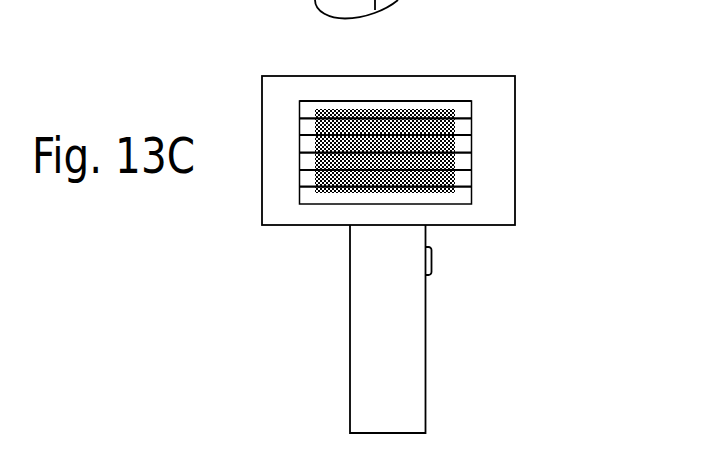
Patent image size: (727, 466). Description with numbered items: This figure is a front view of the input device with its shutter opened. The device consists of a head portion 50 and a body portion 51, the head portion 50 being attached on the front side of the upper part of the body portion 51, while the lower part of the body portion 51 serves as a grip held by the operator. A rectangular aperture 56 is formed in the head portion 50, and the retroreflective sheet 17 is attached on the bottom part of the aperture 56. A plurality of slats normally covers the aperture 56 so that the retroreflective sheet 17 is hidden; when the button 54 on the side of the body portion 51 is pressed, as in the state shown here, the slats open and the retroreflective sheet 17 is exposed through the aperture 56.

The retroreflective sheet 17 is at (418, 110).
The head portion 50 is at (262, 107).
The body portion 51 is at (410, 372).
The button 54 is at (432, 270).
The rectangular aperture 56 is at (328, 203).